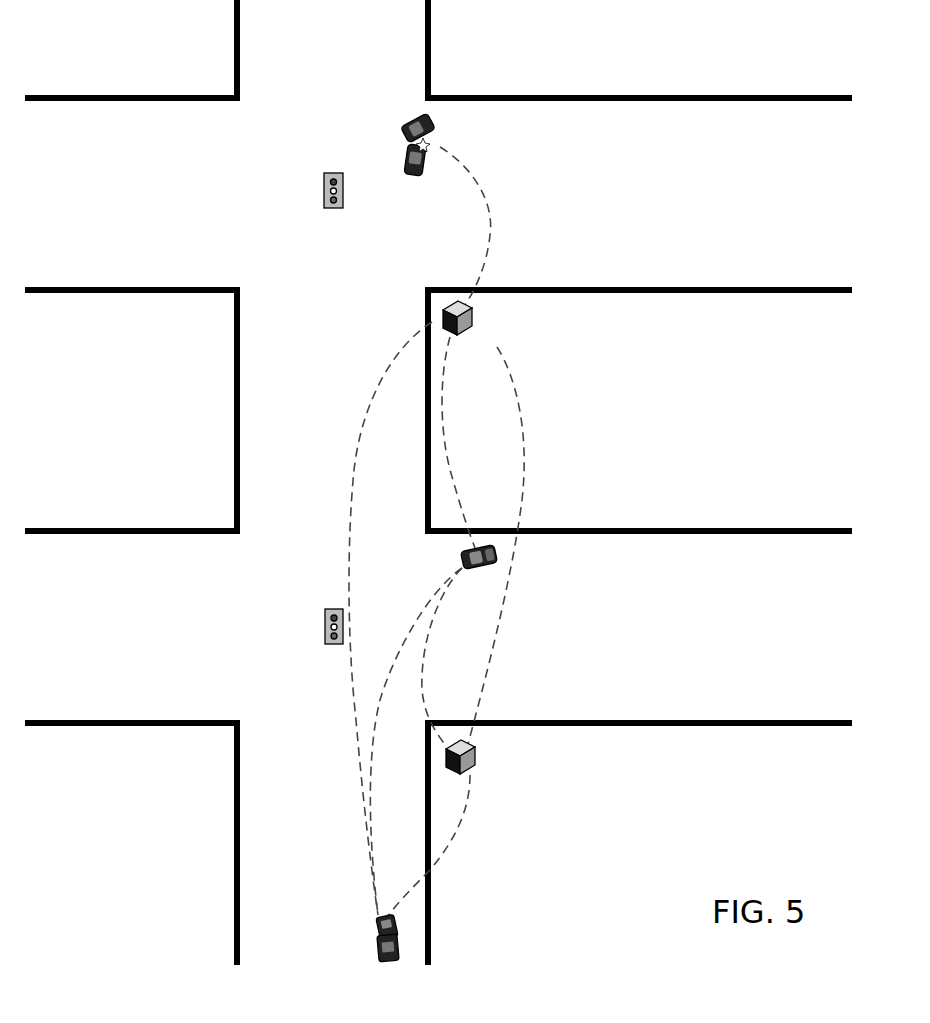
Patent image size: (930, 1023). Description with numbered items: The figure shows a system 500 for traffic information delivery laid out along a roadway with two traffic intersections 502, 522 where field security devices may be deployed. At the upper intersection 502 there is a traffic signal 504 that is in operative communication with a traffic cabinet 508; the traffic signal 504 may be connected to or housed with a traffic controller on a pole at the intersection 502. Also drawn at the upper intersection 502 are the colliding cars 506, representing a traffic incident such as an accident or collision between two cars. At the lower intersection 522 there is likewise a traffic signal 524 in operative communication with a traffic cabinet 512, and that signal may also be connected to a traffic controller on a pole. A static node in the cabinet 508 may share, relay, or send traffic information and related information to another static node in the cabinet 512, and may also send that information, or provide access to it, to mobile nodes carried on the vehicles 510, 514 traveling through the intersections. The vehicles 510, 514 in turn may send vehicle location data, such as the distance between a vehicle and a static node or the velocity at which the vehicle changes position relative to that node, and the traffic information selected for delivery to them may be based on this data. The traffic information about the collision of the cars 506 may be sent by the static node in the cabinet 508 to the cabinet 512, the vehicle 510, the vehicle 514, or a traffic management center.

The system 500 is at (707, 801).
The traffic intersection 502 is at (266, 180).
The traffic signal 504 is at (324, 190).
The vehicles involved in collision 506 is at (437, 137).
The traffic cabinet 508 is at (470, 320).
The vehicle 510 is at (461, 564).
The traffic cabinet 512 is at (470, 764).
The vehicle 514 is at (394, 930).
The traffic intersection 522 is at (271, 618).
The traffic signal 524 is at (325, 626).